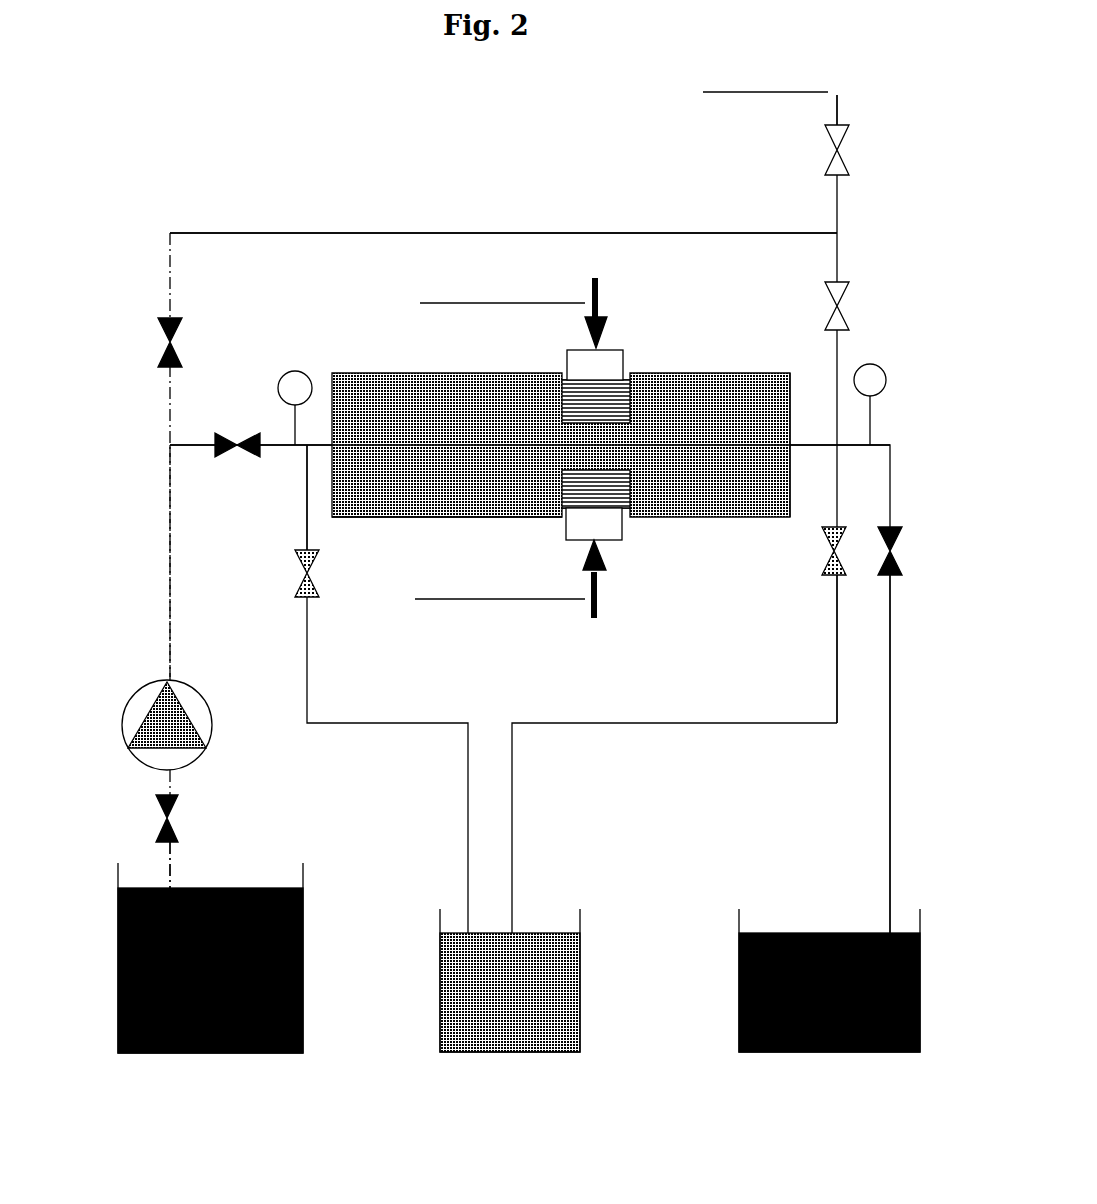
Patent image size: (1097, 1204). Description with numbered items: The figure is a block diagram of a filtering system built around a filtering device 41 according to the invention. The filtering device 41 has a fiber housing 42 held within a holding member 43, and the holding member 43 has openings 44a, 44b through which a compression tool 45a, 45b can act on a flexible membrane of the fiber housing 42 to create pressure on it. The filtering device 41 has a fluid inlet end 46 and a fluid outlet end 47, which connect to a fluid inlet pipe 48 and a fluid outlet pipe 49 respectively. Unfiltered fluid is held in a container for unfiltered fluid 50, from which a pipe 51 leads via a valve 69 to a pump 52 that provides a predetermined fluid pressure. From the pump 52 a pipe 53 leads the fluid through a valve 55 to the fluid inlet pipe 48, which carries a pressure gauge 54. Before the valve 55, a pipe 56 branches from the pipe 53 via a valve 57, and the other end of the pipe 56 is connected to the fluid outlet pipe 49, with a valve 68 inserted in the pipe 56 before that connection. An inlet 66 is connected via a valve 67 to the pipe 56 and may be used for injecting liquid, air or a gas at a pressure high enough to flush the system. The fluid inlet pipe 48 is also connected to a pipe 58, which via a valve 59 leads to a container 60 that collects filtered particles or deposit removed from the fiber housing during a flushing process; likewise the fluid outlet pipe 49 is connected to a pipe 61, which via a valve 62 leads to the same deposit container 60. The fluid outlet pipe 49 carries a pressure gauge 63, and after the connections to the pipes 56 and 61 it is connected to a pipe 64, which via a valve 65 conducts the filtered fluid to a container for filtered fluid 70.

The filtering device 41 is at (668, 352).
The fiber housing 42 is at (622, 518).
The holding member 43 is at (446, 521).
The opening 44a is at (562, 367).
The opening 44b is at (562, 521).
The compression tool 45a is at (612, 343).
The compression tool 45b is at (602, 554).
The fluid inlet end 46 is at (332, 374).
The fluid outlet end 47 is at (796, 380).
The fluid inlet pipe 48 is at (300, 458).
The fluid outlet pipe 49 is at (812, 446).
The container for unfiltered fluid 50 is at (266, 884).
The pipe 51 is at (174, 870).
The pump 52 is at (210, 736).
The pipe 53 is at (168, 570).
The pressure gauge 54 is at (278, 386).
The valve 55 is at (236, 458).
The pipe 56 is at (231, 233).
The valve 57 is at (182, 344).
The pipe 58 is at (302, 515).
The valve 59 is at (311, 574).
The container 60 is at (438, 950).
The pipe 61 is at (824, 642).
The valve 62 is at (826, 554).
The pressure gauge 63 is at (866, 364).
The pipe 64 is at (878, 744).
The valve 65 is at (886, 568).
The inlet 66 is at (835, 70).
The valve 67 is at (824, 152).
The valve 68 is at (822, 304).
The valve 69 is at (178, 818).
The container for filtered fluid 70 is at (738, 970).